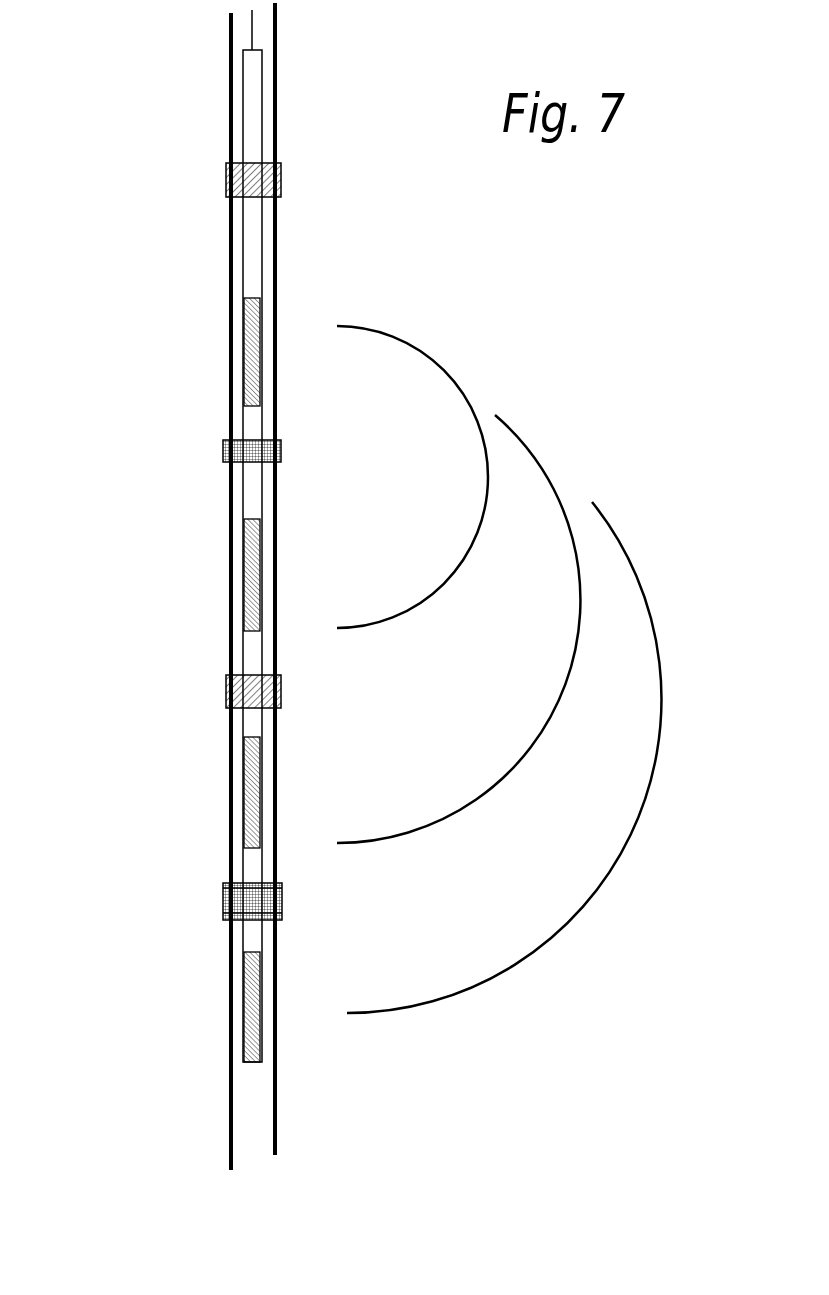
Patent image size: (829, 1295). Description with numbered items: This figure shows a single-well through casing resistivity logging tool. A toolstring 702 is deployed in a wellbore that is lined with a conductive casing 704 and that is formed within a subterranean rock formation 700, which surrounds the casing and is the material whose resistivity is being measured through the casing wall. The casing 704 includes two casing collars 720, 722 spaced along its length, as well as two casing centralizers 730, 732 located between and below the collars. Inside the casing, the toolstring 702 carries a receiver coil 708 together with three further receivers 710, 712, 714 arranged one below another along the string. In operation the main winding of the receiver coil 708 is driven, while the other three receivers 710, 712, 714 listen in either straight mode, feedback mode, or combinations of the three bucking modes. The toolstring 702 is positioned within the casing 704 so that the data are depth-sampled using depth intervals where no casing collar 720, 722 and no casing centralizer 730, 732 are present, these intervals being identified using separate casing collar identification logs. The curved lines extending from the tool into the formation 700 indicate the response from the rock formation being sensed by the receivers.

The subterranean rock formation 700 is at (508, 472).
The toolstring 702 is at (250, 73).
The conductive casing 704 is at (229, 272).
The receiver coil 708 is at (256, 377).
The receiver 710 is at (253, 582).
The receiver 712 is at (257, 817).
The receiver 714 is at (255, 1018).
The casing collar 720 is at (233, 177).
The casing collar 722 is at (233, 687).
The casing centralizer 730 is at (232, 452).
The casing centralizer 732 is at (232, 900).